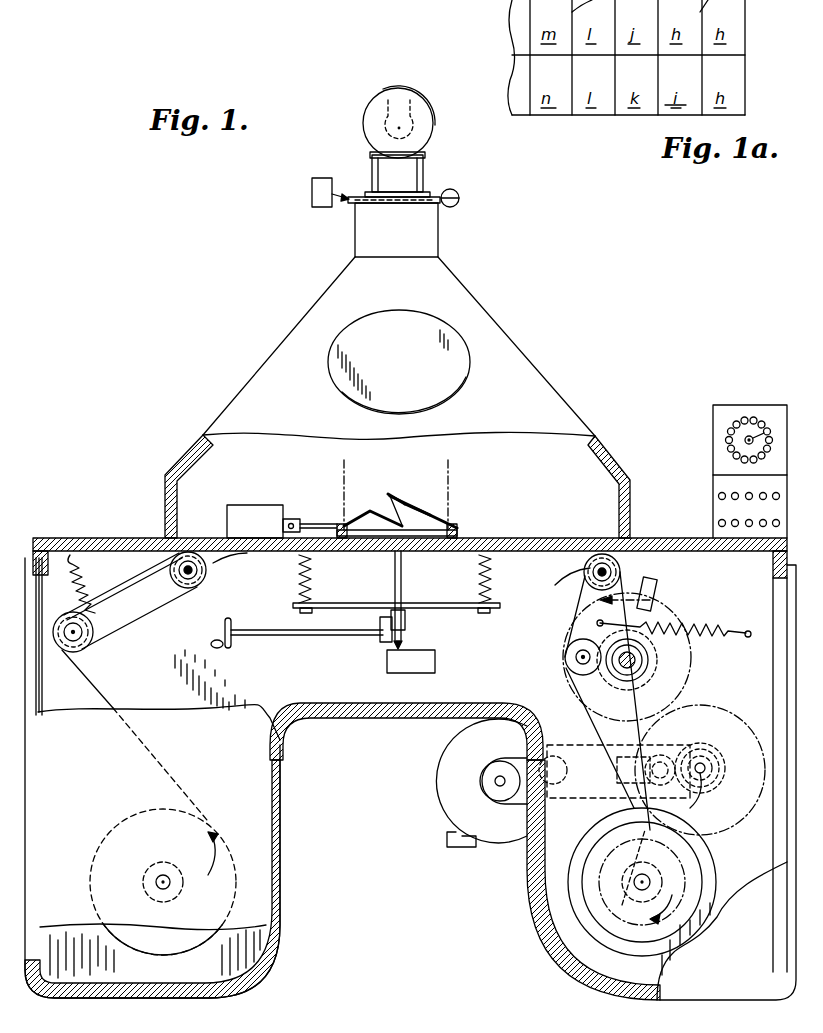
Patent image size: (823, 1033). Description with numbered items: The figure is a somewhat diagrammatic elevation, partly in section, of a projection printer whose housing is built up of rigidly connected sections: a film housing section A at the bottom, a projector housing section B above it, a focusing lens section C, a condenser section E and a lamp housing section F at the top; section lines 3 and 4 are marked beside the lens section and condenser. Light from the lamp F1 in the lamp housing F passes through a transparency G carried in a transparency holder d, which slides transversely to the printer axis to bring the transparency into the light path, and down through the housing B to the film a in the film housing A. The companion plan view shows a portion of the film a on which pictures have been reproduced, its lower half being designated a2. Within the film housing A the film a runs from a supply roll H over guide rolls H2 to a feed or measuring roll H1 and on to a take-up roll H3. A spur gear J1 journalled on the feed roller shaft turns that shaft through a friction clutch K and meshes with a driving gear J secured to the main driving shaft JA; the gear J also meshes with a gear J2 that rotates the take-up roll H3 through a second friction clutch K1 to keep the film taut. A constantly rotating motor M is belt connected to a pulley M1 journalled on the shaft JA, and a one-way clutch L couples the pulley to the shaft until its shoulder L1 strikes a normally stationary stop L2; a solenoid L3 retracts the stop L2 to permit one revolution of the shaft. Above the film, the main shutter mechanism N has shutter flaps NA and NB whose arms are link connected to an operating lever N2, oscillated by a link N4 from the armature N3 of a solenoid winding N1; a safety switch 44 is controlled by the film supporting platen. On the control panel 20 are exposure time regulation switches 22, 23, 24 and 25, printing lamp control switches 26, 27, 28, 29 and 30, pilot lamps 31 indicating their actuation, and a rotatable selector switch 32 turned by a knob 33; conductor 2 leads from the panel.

In FIG. 1A, the lower half of the film a2 is at (672, 113).
In FIG. 1, the section line 3- 3 is at (287, 200).
In FIG. 1, the section line 4- 4 is at (238, 172).
In FIG. 1, the lamp housing section F is at (365, 115).
In FIG. 1, the lamp F1 is at (382, 134).
In FIG. 1, the condenser section E is at (372, 172).
In FIG. 1, the focusing lens section C is at (355, 228).
In FIG. 1, the transparency G is at (406, 204).
In FIG. 1, the transparency holder d is at (450, 189).
In FIG. 1, the projector housing section B is at (300, 330).
In FIG. 1, the solenoid winding N1 is at (255, 521).
In FIG. 1, the armature N3 is at (286, 519).
In FIG. 1, the link N4 is at (325, 526).
In FIG. 1, the main shutter mechanism N is at (422, 519).
In FIG. 1, the shutter flap NA is at (356, 525).
In FIG. 1, the operating lever N2 is at (402, 523).
In FIG. 1, the shutter flap NB is at (436, 505).
In FIG. 1, the safety switch 44 is at (422, 670).
In FIG. 1, the film housing section A is at (270, 786).
In FIG. 1, the take-up roll H3 is at (575, 918).
In FIG. 1, the terminal 2 is at (776, 528).
In FIG. 1, the supply roll H is at (240, 940).
In FIG. 1, the guide rolls H2 is at (206, 576).
In FIG. 1, the film a is at (102, 690).
In FIG. 1, the feed or measuring roll H1 is at (648, 660).
In FIG. 1, the friction clutch K is at (629, 680).
In FIG. 1, the spur gear J1 is at (692, 663).
In FIG. 1, the driving gear J is at (752, 716).
In FIG. 1, the pulley M1 is at (724, 772).
In FIG. 1, the main driving shaft JA is at (695, 800).
In FIG. 1, the one-way clutch L is at (716, 790).
In FIG. 1, the shoulder L1 is at (678, 745).
In FIG. 1, the stop L2 is at (662, 775).
In FIG. 1, the solenoid L3 is at (606, 776).
In FIG. 1, the gear J2 is at (702, 860).
In FIG. 1, the second friction clutch K1 is at (622, 905).
In FIG. 1, the motor M is at (450, 775).
In FIG. 1, the control panel 20 is at (735, 406).
In FIG. 1, the selector switch 32 is at (714, 441).
In FIG. 1, the knob 33 is at (766, 437).
In FIG. 1, the pilot lamp 31 is at (748, 494).
In FIG. 1, the printing lamp control switch 30 is at (722, 503).
In FIG. 1, the printing lamp control switch 29 is at (735, 505).
In FIG. 1, the printing lamp control switch 28 is at (778, 495).
In FIG. 1, the printing lamp control switch 27 is at (762, 503).
In FIG. 1, the printing lamp control switch 26 is at (750, 500).
In FIG. 1, the exposure time regulation switch 25 is at (722, 528).
In FIG. 1, the exposure time regulation switch 24 is at (735, 528).
In FIG. 1, the exposure time regulation switch 23 is at (749, 528).
In FIG. 1, the exposure time regulation switch 22 is at (763, 528).